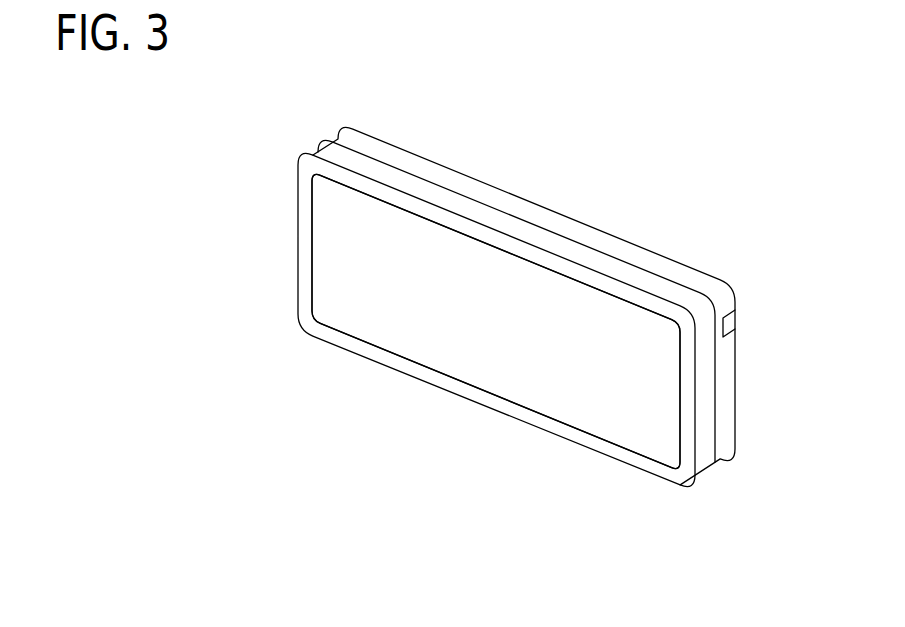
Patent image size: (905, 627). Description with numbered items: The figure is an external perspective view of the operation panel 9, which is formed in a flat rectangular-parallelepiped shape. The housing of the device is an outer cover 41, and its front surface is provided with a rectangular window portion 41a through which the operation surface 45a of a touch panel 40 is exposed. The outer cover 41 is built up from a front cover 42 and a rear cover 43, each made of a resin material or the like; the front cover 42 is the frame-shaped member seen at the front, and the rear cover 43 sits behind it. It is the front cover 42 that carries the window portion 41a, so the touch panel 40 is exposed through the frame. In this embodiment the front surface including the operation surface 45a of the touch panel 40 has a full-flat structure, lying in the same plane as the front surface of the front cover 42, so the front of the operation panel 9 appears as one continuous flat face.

The operation panel 9 is at (657, 182).
The touch panel 40 is at (440, 333).
The operation surface 45a is at (496, 321).
The outer cover 41 is at (317, 147).
The window portion 41a is at (318, 228).
The front cover 42 is at (462, 198).
The rear cover 43 is at (550, 210).